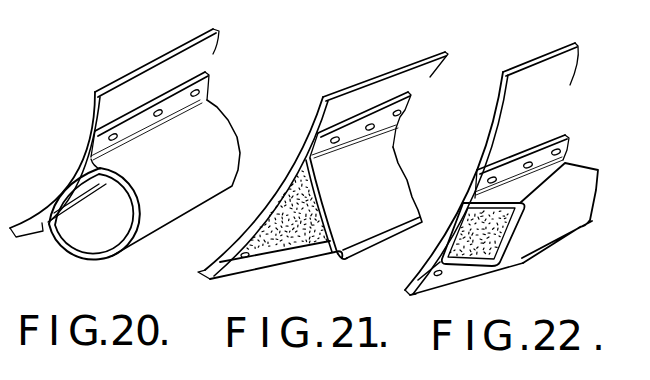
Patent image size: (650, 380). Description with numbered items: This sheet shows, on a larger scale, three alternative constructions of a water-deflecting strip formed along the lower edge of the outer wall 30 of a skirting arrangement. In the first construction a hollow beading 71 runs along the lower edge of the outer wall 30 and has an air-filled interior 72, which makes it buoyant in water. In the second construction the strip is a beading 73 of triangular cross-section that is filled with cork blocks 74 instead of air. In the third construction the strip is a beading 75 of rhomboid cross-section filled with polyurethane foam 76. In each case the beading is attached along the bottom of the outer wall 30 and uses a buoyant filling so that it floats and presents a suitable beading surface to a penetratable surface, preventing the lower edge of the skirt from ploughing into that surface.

In FIG. 20, the outer wall 30 is at (133, 78).
In FIG. 21, the outer wall 30 is at (375, 82).
In FIG. 22, the outer wall 30 is at (543, 75).
In FIG. 20, the hollow beading 71 is at (172, 170).
In FIG. 20, the air-filled interior 72 is at (96, 222).
In FIG. 21, the beading 73 is at (375, 210).
In FIG. 21, the cork blocks 74 is at (292, 225).
In FIG. 22, the beading 75 is at (550, 223).
In FIG. 22, the polyurethane foam 76 is at (482, 248).